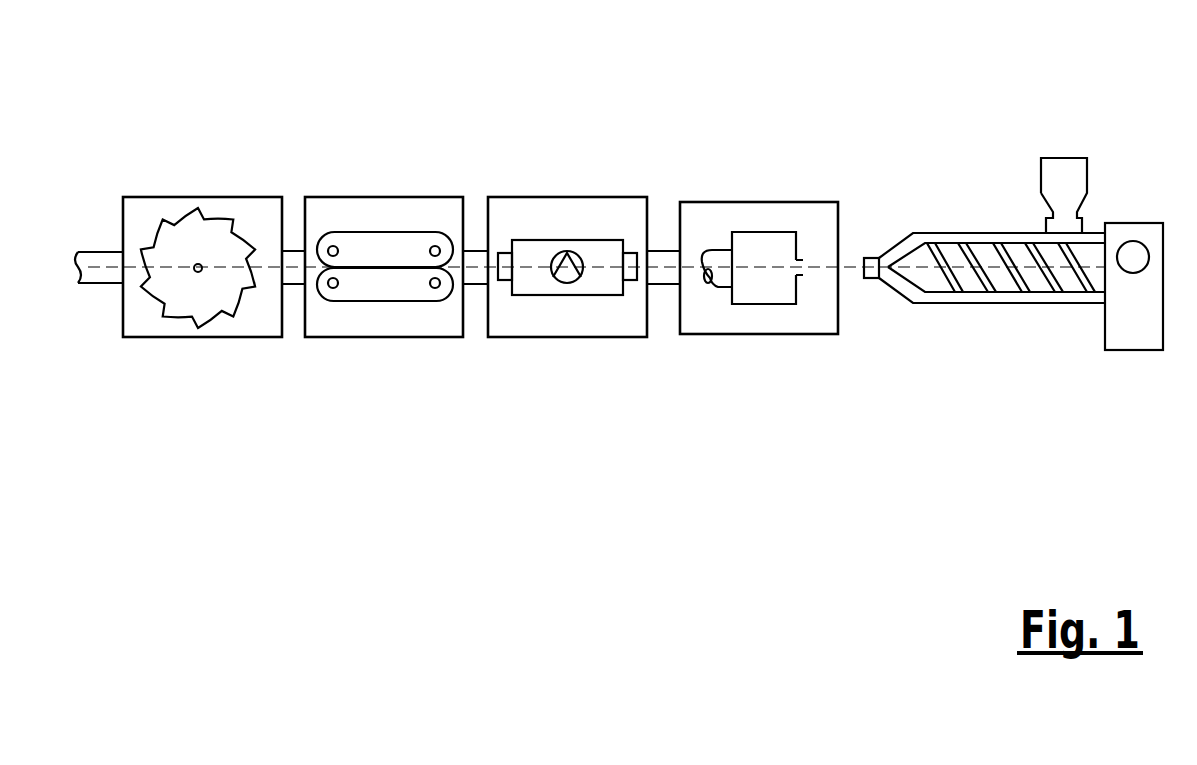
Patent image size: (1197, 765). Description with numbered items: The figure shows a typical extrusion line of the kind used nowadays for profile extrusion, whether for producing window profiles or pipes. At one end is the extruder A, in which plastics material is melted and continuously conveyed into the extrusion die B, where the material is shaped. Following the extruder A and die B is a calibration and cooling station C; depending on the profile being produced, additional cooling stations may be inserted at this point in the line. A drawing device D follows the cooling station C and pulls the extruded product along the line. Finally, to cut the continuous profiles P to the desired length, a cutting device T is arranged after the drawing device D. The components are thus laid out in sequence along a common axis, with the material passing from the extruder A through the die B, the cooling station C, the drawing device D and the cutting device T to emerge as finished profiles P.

The continuous profiles P is at (102, 250).
The cutting device T is at (207, 240).
The drawing device D is at (413, 218).
The calibration and cooling station C is at (573, 218).
The extrusion die B is at (777, 218).
The extruder A is at (992, 255).